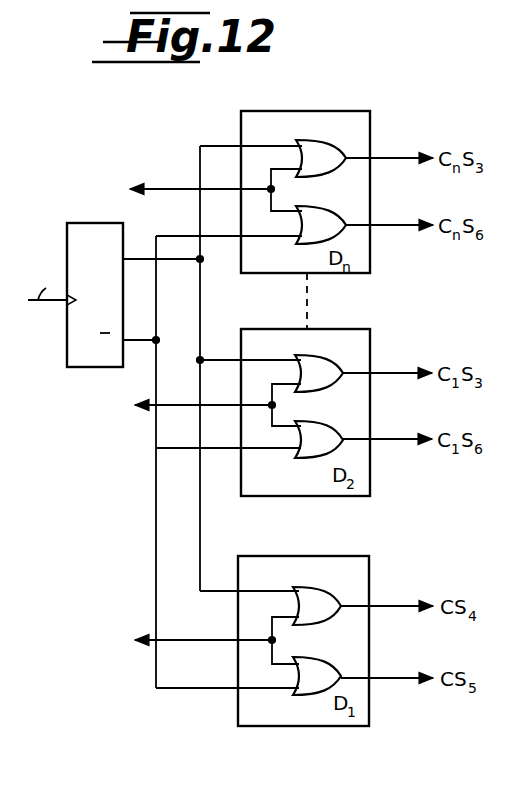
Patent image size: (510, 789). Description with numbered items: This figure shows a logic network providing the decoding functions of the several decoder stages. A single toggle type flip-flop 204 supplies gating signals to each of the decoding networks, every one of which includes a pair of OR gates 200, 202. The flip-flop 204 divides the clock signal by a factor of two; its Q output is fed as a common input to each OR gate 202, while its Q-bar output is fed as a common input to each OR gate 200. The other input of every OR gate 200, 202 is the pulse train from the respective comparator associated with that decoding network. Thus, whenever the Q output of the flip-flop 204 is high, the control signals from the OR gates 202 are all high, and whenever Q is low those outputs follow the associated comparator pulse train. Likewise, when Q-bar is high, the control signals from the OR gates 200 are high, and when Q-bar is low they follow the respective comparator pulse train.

The OR gate 200 is at (345, 203).
The OR gate 202 is at (318, 140).
The flip-flop 204 is at (124, 234).